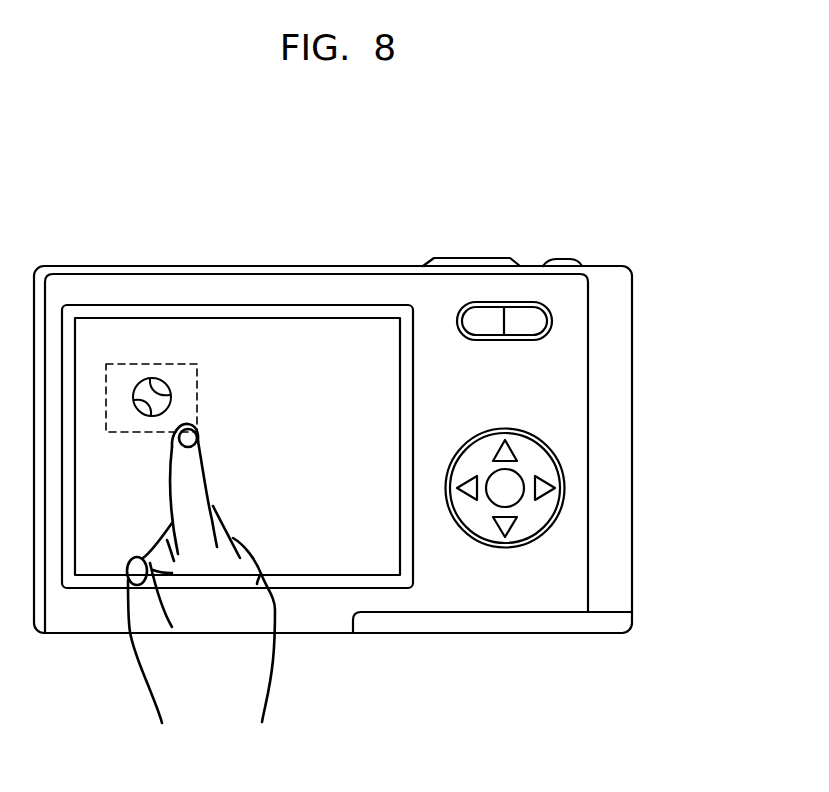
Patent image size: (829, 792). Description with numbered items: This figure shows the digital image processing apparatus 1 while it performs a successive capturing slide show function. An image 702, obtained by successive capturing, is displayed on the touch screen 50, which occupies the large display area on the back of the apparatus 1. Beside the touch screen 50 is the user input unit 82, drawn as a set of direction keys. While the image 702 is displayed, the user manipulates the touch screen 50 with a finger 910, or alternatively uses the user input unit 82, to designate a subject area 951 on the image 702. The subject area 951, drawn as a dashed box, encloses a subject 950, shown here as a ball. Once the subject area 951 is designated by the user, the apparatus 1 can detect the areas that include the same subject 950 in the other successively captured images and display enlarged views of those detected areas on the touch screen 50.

The digital image processing apparatus 1 is at (524, 219).
The touch screen 50 is at (413, 392).
The user input unit 82 is at (565, 483).
The image 702 is at (309, 337).
The finger 910 is at (203, 472).
The subject 950 is at (168, 387).
The subject area 951 is at (198, 399).